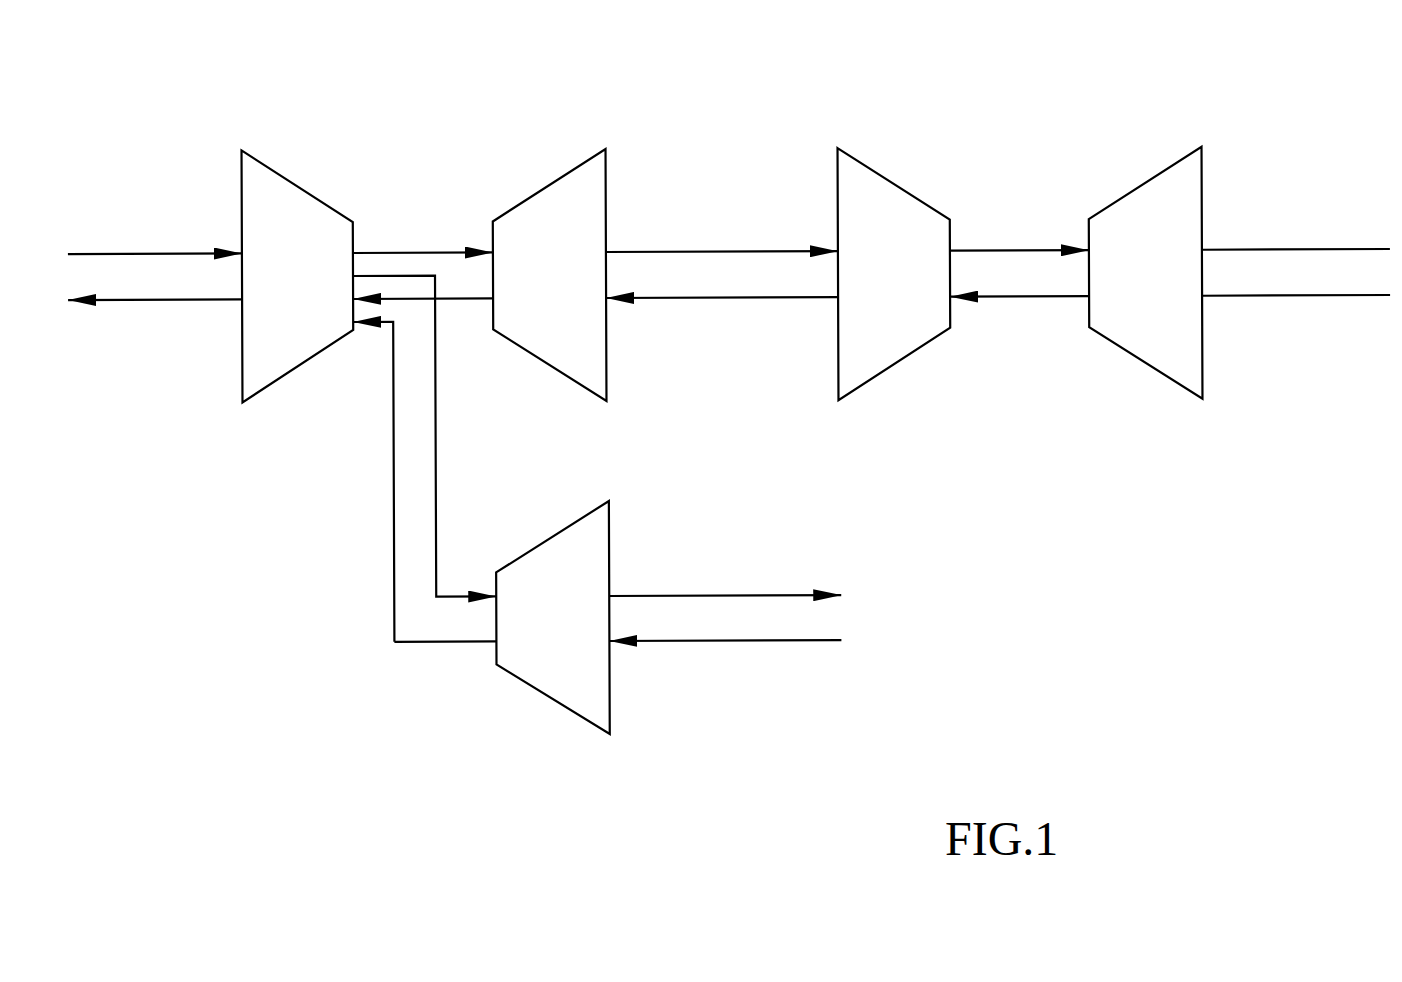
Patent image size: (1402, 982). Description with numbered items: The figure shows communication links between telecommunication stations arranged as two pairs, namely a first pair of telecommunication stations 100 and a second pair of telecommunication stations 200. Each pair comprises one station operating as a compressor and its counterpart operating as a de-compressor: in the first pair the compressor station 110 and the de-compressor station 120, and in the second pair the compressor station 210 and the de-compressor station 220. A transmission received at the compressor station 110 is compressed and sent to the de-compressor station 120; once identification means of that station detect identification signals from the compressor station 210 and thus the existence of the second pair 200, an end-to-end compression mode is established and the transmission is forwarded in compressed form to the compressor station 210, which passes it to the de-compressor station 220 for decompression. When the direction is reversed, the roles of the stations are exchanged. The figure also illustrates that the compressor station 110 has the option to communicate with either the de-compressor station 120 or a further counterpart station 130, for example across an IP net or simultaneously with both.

The pair of telecommunication stations 100 is at (426, 207).
The compressor station 110 is at (285, 177).
The de-compressor station 120 is at (550, 178).
The alternative counterpart station 130 is at (552, 700).
The pair of telecommunication stations 200 is at (1030, 210).
The compressor station 210 is at (906, 190).
The de-compressor station 220 is at (1140, 180).